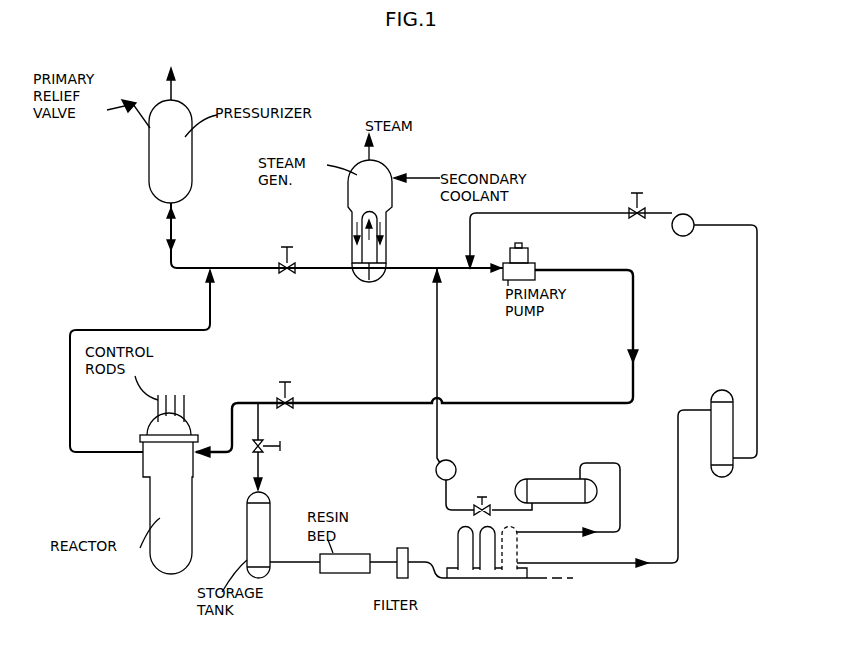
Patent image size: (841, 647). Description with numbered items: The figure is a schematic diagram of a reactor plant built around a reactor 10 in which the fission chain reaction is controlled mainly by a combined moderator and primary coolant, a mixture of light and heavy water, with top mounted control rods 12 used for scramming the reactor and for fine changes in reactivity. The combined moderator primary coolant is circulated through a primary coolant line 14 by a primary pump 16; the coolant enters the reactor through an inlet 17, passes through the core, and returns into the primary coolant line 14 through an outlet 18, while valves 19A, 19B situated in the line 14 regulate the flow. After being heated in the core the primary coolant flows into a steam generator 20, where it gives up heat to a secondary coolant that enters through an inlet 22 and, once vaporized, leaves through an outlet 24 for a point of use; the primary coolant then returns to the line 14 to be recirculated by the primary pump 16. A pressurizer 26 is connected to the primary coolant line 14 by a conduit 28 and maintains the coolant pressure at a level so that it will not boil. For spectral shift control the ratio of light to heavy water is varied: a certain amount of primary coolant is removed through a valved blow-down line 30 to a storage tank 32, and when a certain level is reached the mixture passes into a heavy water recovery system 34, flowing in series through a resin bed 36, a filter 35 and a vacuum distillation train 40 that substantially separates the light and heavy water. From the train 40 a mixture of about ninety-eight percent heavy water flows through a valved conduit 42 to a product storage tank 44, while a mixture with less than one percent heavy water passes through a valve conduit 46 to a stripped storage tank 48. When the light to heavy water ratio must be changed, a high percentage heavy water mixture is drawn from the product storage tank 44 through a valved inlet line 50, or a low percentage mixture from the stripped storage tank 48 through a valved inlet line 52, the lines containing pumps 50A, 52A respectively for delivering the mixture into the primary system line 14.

The reactor 10 is at (190, 541).
The control rods 12 is at (156, 407).
The primary coolant line 14 is at (633, 306).
The primary pump 16 is at (530, 262).
The inlet 17 is at (195, 457).
The outlet 18 is at (143, 458).
The valve 19A is at (290, 274).
The valve 19B is at (293, 398).
The steam generator 20 is at (348, 188).
The inlet 22 is at (394, 178).
The outlet 24 is at (372, 160).
The pressurizer 26 is at (155, 148).
The conduit 28 is at (176, 262).
The valved blow-down line 30 is at (262, 430).
The storage tank 32 is at (265, 512).
The heavy water recovery system 34 is at (342, 580).
The filter 35 is at (399, 576).
The resin bed 36 is at (348, 558).
The vacuum distillation train 40 is at (486, 580).
The valved conduit 42 is at (540, 533).
The product storage tank 44 is at (553, 487).
The valve conduit 46 is at (650, 572).
The stripped storage tank 48 is at (735, 467).
The valved inlet line 50 is at (437, 335).
The pump 50A is at (455, 462).
The valved inlet line 52 is at (757, 322).
The pump 52A is at (675, 214).